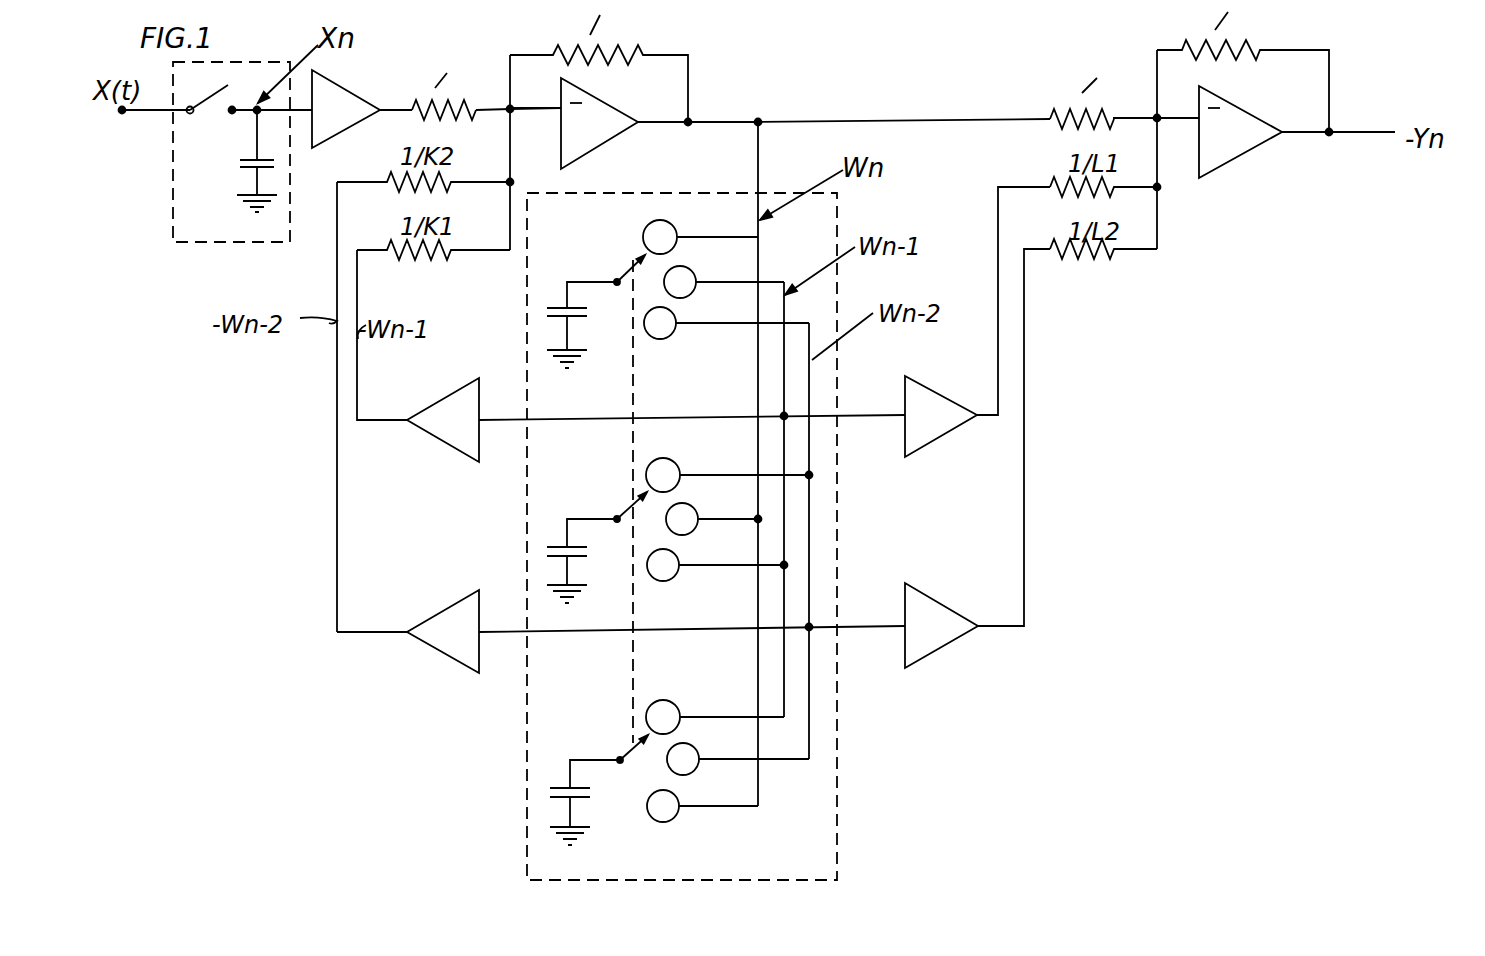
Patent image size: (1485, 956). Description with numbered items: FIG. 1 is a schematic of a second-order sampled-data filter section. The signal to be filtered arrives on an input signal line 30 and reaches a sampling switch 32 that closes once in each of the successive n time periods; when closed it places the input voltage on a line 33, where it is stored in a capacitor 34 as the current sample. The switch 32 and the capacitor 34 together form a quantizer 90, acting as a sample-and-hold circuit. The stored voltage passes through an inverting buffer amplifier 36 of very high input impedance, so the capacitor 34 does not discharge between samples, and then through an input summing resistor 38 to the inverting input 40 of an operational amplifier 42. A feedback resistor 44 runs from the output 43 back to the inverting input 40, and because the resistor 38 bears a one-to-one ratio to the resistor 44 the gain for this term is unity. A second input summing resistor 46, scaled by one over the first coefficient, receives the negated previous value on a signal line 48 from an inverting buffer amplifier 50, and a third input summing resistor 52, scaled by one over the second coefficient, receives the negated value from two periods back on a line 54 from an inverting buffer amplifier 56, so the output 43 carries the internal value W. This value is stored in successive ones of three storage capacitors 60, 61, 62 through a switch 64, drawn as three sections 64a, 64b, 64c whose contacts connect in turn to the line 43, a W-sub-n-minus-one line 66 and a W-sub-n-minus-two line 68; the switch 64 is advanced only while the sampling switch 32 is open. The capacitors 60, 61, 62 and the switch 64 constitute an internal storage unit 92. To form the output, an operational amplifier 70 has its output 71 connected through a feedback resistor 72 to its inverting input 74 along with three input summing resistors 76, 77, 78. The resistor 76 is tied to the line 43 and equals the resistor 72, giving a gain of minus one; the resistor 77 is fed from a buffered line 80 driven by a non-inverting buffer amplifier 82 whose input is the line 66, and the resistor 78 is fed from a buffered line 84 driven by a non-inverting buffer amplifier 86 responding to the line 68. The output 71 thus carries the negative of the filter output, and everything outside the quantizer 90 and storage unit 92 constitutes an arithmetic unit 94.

The input signal line 30 is at (160, 116).
The sampling switch 32 is at (223, 106).
The line 33 is at (244, 106).
The capacitor 34 is at (243, 162).
The inverting buffer amplifier 36 is at (333, 85).
The input summing resistor 38 is at (450, 100).
The inverting input 40 is at (537, 106).
The operational amplifier 42 is at (603, 130).
The output 43 is at (740, 125).
The feedback resistor 44 is at (620, 61).
The second input summing resistor 46 is at (440, 253).
The signal line 48 is at (359, 375).
The inverting buffer amplifier 50 is at (497, 370).
The third input summing resistor 52 is at (400, 177).
The line 54 is at (337, 376).
The inverting buffer amplifier 56 is at (440, 610).
The storage capacitor 60 is at (577, 317).
The storage capacitor 61 is at (580, 550).
The storage capacitor 62 is at (550, 795).
The switch 64 is at (633, 440).
The switch 64a is at (647, 298).
The switch 64b is at (654, 538).
The switch 64c is at (631, 783).
The W-sub-n-minus-one line 66 is at (778, 387).
The W-sub-n-minus-two line 68 is at (811, 409).
The operational amplifier 70 is at (1236, 158).
The output 71 is at (1343, 138).
The feedback resistor 72 is at (1244, 54).
The inverting input 74 is at (1190, 120).
The input summing resistor 76 is at (1050, 117).
The input summing resistor 77 is at (1050, 186).
The input summing resistor 78 is at (1052, 246).
The buffered W-sub-n-minus-one line 80 is at (998, 271).
The non-inverting buffer amplifier 82 is at (940, 378).
The buffered W-sub-n-minus-two line 84 is at (1026, 456).
The non-inverting buffer amplifier 86 is at (935, 591).
The quantizer 90 is at (182, 249).
The internal storage unit 92 is at (522, 712).
The arithmetic unit 94 is at (325, 548).